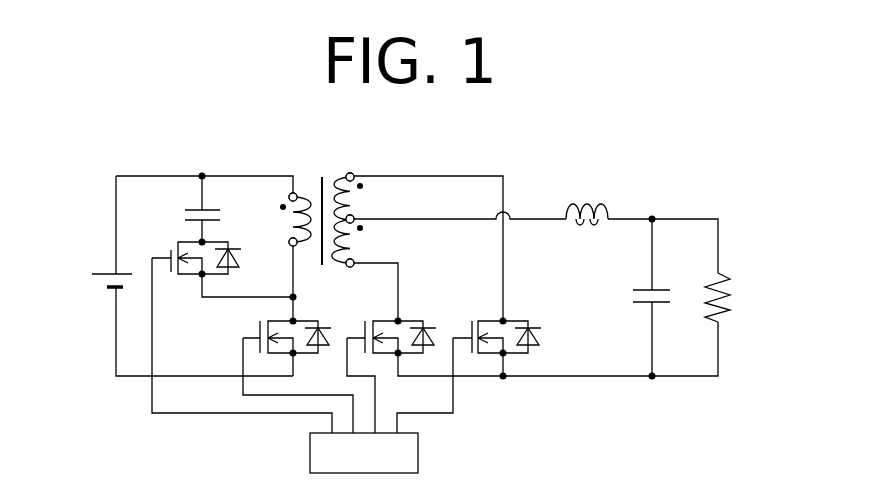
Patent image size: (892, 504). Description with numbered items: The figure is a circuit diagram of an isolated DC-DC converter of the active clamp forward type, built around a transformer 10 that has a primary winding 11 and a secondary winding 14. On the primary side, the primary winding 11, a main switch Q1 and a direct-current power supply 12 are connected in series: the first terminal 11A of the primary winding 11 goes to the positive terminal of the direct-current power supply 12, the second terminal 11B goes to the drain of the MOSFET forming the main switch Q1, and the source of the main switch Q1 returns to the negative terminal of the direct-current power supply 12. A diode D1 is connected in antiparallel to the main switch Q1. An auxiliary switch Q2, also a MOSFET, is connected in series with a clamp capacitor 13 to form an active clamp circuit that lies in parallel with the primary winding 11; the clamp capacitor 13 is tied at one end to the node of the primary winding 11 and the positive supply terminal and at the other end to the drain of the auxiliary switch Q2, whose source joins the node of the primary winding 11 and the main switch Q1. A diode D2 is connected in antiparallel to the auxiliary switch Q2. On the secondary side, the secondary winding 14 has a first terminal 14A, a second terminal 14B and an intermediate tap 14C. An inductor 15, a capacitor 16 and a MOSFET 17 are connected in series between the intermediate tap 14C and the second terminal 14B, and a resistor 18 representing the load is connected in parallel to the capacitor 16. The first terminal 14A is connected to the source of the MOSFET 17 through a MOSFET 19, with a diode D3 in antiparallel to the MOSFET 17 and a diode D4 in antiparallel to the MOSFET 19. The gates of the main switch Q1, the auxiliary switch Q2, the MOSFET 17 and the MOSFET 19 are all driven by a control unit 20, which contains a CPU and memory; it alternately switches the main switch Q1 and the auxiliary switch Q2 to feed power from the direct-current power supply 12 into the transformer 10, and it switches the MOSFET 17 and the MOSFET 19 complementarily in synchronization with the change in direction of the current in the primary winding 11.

The transformer 10 is at (319, 190).
The primary winding 11 is at (298, 191).
The first terminal 11A is at (289, 199).
The second terminal 11B is at (289, 240).
The direct-current power supply 12 is at (105, 272).
The clamp capacitor 13 is at (192, 210).
The secondary winding 14 is at (348, 175).
The first terminal 14A is at (355, 175).
The second terminal 14B is at (355, 262).
The intermediate tap 14C is at (355, 218).
The inductor 15 is at (588, 226).
The capacitor 16 is at (655, 291).
The MOSFET 17 is at (388, 316).
The resistor (load) 18 is at (724, 275).
The MOSFET 19 is at (492, 316).
The control unit 20 is at (420, 453).
The main switch Q1 is at (270, 316).
The auxiliary switch Q2 is at (200, 278).
The diode D1 is at (326, 332).
The diode D2 is at (240, 257).
The diode D3 is at (432, 332).
The diode D4 is at (537, 332).